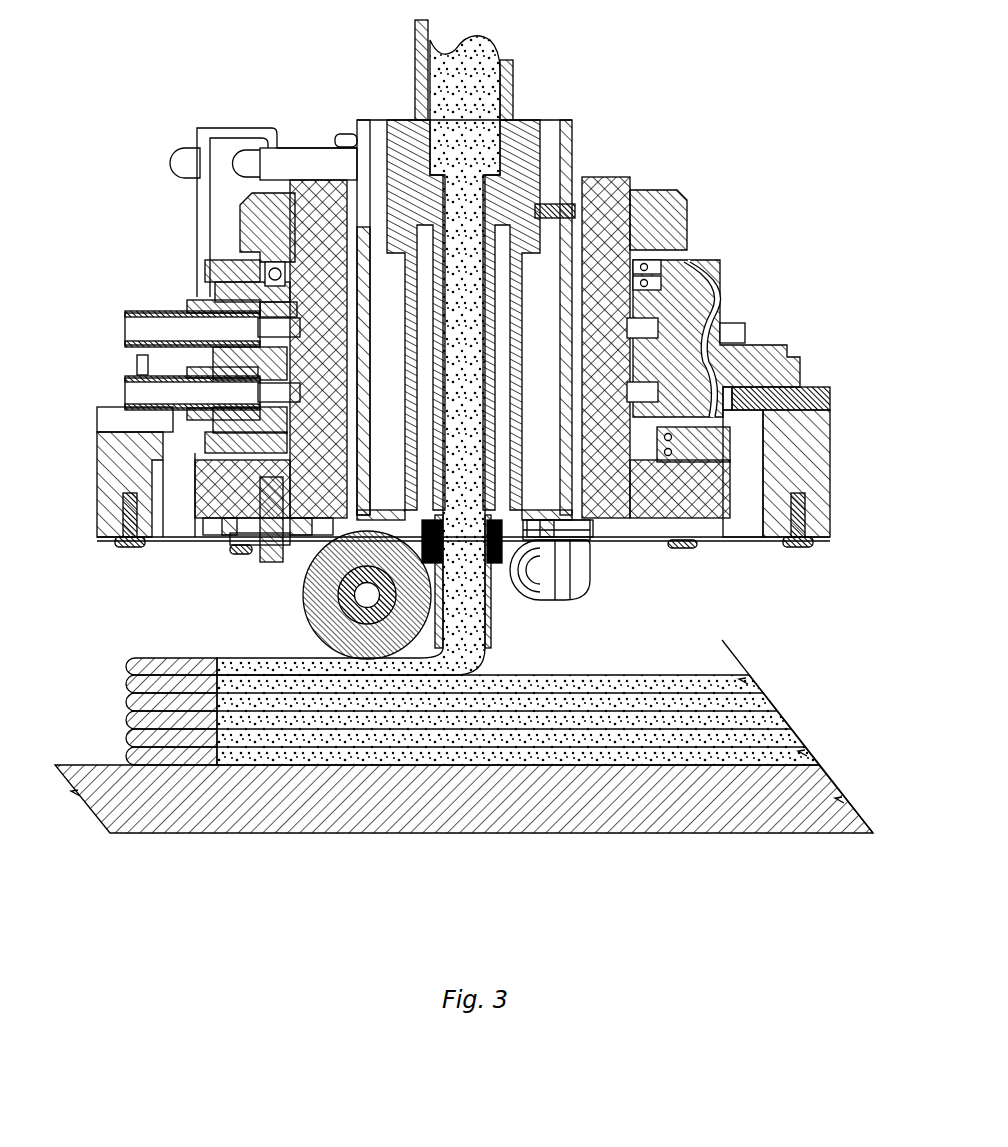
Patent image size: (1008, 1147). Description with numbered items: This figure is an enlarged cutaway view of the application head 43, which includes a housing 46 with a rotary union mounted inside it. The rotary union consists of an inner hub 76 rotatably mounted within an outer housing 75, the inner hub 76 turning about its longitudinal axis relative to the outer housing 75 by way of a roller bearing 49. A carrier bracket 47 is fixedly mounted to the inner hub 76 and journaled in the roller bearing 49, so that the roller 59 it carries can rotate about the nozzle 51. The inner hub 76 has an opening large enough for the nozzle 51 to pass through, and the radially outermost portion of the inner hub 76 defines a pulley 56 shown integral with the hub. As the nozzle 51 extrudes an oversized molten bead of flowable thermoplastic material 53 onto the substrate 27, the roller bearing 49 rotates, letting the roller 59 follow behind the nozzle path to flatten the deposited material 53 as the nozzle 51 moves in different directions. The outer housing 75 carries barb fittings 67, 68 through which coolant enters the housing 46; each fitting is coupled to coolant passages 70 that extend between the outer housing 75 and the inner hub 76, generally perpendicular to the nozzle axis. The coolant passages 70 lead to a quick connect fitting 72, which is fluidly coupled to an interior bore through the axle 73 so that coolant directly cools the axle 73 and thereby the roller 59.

The build platform 27 is at (590, 833).
The application head 43 is at (772, 212).
The housing 46 is at (830, 453).
The carrier bracket 47 is at (245, 550).
The roller bearing 49 is at (687, 252).
The nozzle 51 is at (408, 120).
The material 53 is at (478, 48).
The pulley 56 is at (730, 495).
The roller 59 is at (300, 604).
The barb fitting 67 is at (122, 398).
The barb fitting 68 is at (122, 330).
The coolant passage 70 is at (716, 290).
The quick connect fitting 72 is at (575, 593).
The axle 73 is at (305, 583).
The outer housing 75 is at (235, 262).
The inner hub 76 is at (603, 178).